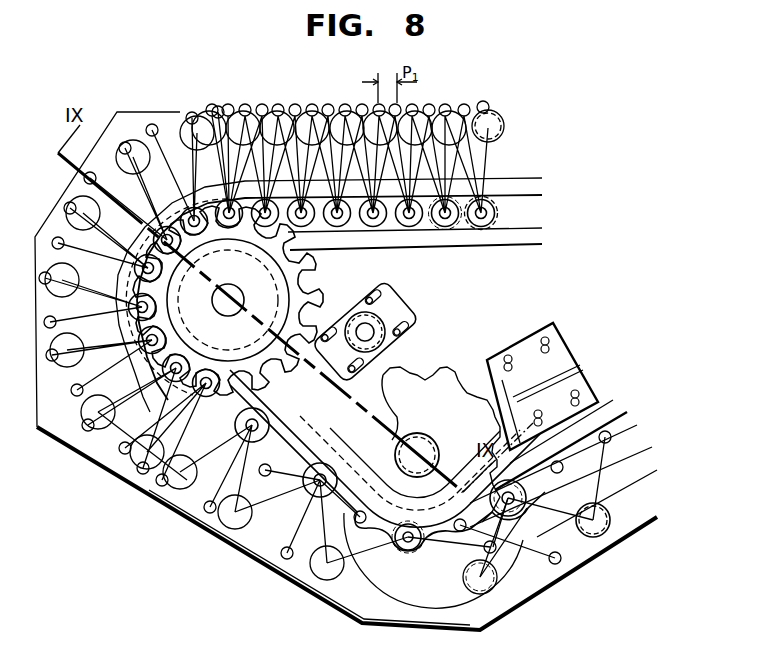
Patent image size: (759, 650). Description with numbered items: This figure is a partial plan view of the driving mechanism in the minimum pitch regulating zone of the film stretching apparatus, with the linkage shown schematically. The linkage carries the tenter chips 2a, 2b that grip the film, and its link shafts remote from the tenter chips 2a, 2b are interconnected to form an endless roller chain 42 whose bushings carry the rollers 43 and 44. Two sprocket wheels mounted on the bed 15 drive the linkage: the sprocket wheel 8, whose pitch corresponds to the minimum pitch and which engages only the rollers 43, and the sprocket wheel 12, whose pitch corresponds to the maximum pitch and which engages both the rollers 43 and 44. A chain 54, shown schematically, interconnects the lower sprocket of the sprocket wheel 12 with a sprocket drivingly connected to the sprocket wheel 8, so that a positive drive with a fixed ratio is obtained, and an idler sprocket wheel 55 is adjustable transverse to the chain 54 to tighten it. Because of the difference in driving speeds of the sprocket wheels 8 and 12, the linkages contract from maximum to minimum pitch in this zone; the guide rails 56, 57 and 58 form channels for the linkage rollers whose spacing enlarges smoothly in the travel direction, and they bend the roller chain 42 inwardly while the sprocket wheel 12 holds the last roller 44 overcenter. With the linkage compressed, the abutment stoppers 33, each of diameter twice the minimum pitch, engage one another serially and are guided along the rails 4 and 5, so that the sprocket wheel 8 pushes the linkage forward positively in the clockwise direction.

The tenter chip 2a is at (467, 104).
The tenter chip 2b is at (488, 113).
The guide rail 4 is at (540, 232).
The guide rail 5 is at (530, 184).
The sprocket wheel 8 is at (303, 265).
The sprocket wheel 12 is at (446, 374).
The bed 15 is at (66, 446).
The abutment stopper 33 is at (484, 230).
The roller chain 42 is at (622, 460).
The roller 43 is at (611, 437).
The roller 44 is at (562, 471).
The chain 54 is at (342, 333).
The idler sprocket wheel 55 is at (385, 317).
The guide rail 56 is at (303, 428).
The guide rail 57 is at (130, 420).
The guide rail 58 is at (173, 513).